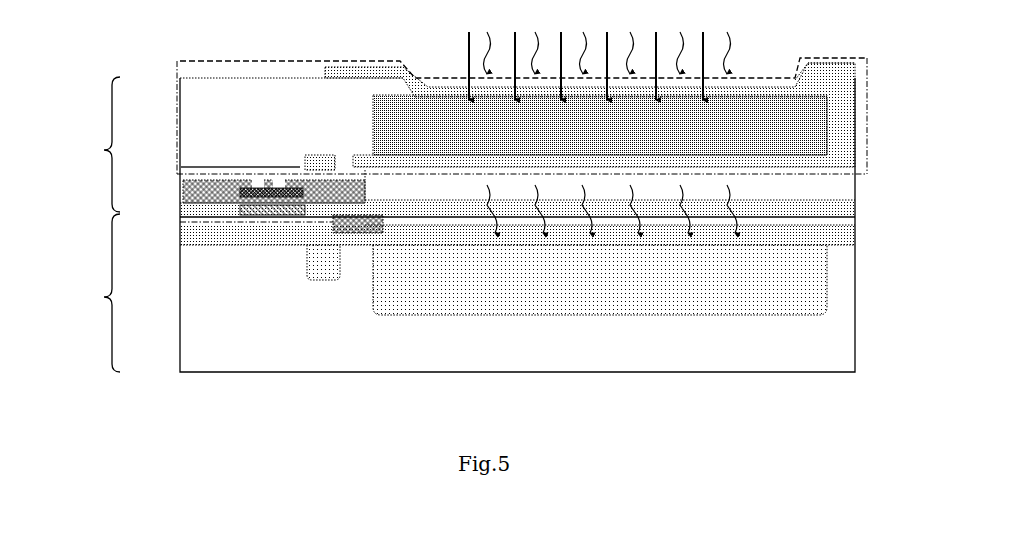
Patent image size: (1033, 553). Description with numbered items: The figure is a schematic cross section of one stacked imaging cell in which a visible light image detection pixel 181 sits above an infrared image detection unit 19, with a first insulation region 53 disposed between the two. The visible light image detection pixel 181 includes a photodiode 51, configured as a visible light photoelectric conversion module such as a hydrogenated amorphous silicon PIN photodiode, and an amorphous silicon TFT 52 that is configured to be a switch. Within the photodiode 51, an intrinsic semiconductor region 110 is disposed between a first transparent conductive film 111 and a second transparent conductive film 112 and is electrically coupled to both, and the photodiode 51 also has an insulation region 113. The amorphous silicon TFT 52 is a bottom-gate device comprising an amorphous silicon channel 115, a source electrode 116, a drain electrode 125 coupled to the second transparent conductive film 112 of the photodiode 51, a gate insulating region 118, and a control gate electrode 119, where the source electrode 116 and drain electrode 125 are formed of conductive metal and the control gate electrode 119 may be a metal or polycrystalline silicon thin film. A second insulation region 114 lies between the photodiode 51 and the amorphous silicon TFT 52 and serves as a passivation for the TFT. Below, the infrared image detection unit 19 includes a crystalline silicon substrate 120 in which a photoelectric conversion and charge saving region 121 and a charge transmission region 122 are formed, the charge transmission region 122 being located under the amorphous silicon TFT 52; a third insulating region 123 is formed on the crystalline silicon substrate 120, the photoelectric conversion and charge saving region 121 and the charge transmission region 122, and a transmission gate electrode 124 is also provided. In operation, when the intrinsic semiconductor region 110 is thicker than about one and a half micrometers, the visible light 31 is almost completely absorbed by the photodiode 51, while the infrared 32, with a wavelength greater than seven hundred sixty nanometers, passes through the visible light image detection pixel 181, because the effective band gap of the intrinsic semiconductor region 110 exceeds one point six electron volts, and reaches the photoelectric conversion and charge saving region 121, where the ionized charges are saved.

The infrared image detection unit 19 is at (102, 297).
The visible light image detection pixel 181 is at (104, 150).
The visible light 31 is at (464, 48).
The infrared 32 is at (733, 60).
The photodiode 51 is at (178, 80).
The amorphous silicon TFT 52 is at (177, 202).
The first insulation region 53 is at (842, 221).
The intrinsic semiconductor region 110 is at (856, 81).
The first transparent conductive film 111 is at (822, 69).
The second transparent conductive film 112 is at (848, 158).
The insulation region 113 is at (842, 129).
The second insulation region 114 is at (848, 180).
The amorphous silicon channel 115 is at (273, 187).
The source electrode 116 is at (188, 183).
The gate insulating region 118 is at (180, 212).
The control gate electrode 119 is at (272, 215).
The crystalline silicon substrate 120 is at (840, 332).
The photoelectric conversion and charge saving region 121 is at (400, 298).
The charge transmission region 122 is at (318, 275).
The third insulating region 123 is at (183, 241).
The transmission gate electrode 124 is at (387, 213).
The drain electrode 125 is at (313, 183).